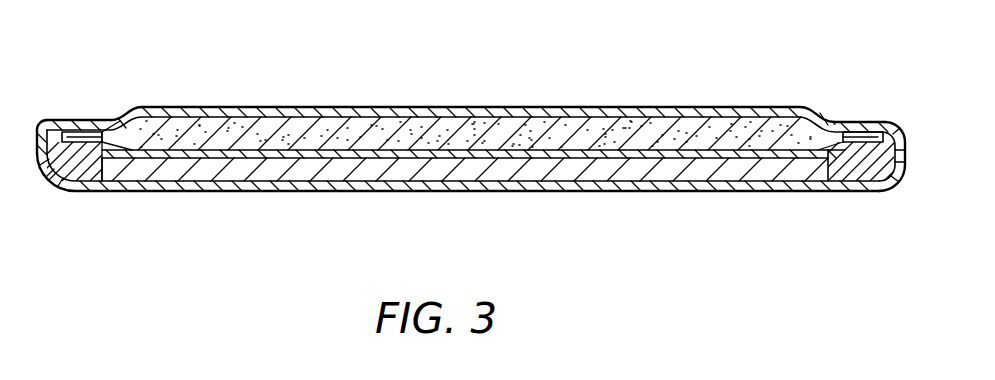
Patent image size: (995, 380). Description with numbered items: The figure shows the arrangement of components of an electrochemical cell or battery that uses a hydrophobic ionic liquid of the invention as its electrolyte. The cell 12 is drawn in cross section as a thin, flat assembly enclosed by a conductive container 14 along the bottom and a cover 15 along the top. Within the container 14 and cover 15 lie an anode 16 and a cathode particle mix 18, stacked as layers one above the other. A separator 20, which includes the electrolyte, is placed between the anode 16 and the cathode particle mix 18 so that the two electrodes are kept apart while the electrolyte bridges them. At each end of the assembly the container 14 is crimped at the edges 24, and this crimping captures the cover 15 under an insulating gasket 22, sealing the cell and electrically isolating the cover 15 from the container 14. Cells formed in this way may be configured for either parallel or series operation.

The cell 12 is at (174, 212).
The conductive container 14 is at (778, 192).
The cover 15 is at (673, 109).
The anode 16 is at (543, 172).
The cathode particle mix 18 is at (524, 130).
The separator 20 is at (700, 160).
The insulating gasket 22 is at (885, 188).
The edges 24 is at (37, 118).